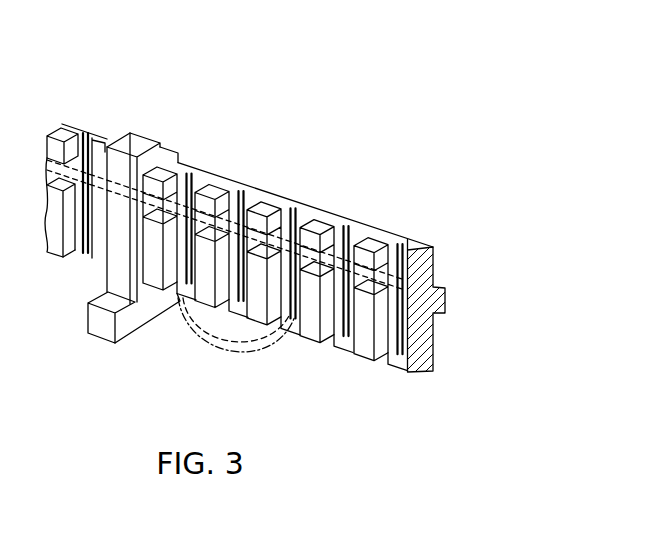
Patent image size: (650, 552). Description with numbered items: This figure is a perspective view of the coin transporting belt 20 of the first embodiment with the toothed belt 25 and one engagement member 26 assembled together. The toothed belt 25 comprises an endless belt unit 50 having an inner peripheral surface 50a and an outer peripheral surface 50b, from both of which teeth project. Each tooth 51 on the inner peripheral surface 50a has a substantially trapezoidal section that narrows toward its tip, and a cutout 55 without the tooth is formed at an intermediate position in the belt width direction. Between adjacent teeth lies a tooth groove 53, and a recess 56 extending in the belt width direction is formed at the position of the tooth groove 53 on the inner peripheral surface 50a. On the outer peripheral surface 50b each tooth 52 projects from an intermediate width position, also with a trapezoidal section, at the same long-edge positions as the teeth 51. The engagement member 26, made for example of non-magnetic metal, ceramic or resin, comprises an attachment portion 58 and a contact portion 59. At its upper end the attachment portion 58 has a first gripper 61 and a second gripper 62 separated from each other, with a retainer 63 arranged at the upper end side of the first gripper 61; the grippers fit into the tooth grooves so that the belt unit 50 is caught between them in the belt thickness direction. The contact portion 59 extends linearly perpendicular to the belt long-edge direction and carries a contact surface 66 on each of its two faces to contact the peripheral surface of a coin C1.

The coin transporting belt 20 is at (230, 94).
The toothed belt 25 is at (77, 113).
The engagement member 26 is at (130, 120).
The retainer 63 is at (109, 201).
The second gripper 62 is at (179, 153).
The belt unit 50 is at (232, 183).
The inner peripheral surface 50a is at (265, 260).
The outer peripheral surface 50b is at (321, 274).
The recess 56 is at (343, 224).
The tooth 52 is at (444, 289).
The first gripper 61 is at (113, 252).
The attachment portion 58 is at (117, 282).
The contact surface 66 is at (87, 320).
The contact portion 59 is at (128, 328).
The coin C1 is at (230, 351).
The cutout 55 is at (293, 321).
The tooth groove 53 is at (337, 344).
The tooth 51 is at (363, 361).